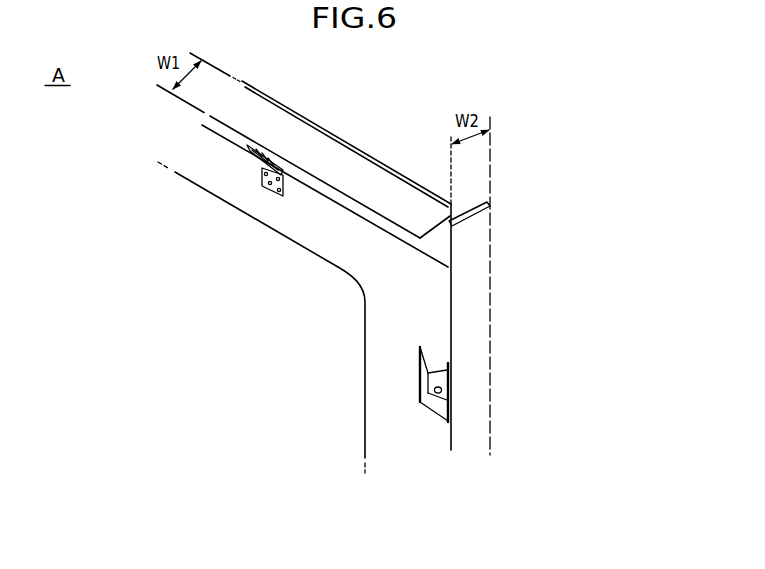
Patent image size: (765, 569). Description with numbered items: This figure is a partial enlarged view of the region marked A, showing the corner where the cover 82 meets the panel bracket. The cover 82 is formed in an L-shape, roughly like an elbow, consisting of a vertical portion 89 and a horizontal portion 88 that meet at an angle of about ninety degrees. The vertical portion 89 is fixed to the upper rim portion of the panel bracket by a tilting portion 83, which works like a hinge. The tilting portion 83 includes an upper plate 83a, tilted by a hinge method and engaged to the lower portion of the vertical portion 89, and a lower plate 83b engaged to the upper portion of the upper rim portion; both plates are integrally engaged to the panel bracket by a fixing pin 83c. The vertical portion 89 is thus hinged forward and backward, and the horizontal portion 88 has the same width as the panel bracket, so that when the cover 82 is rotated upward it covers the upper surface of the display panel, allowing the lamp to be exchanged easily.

The cover 82 is at (370, 82).
The horizontal portion 88 is at (343, 160).
The vertical portion 89 is at (370, 217).
The tilting portion 83 is at (223, 275).
The upper plate 83a is at (262, 165).
The lower plate 83b is at (270, 186).
The fixing pin 83c is at (277, 193).